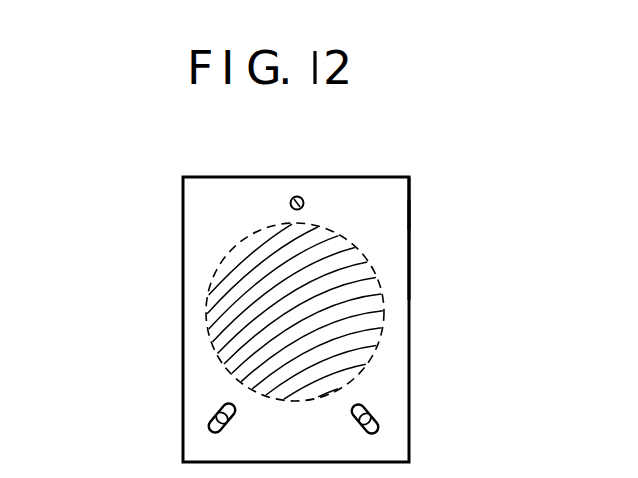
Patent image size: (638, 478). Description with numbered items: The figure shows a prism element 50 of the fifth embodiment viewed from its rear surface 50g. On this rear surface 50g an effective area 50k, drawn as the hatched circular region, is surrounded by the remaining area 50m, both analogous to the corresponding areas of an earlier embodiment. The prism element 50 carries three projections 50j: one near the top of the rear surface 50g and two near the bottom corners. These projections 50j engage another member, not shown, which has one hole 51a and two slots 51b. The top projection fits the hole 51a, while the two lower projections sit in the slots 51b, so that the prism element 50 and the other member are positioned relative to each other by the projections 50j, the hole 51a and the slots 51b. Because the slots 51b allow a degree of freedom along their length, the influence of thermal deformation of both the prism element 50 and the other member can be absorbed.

The prism element 50 is at (250, 177).
The rear surface 50g is at (381, 187).
The area 50m is at (394, 229).
The effective area 50k is at (378, 286).
The projections 50j is at (302, 198).
The hole 51a is at (296, 197).
The slots 51b is at (221, 407).